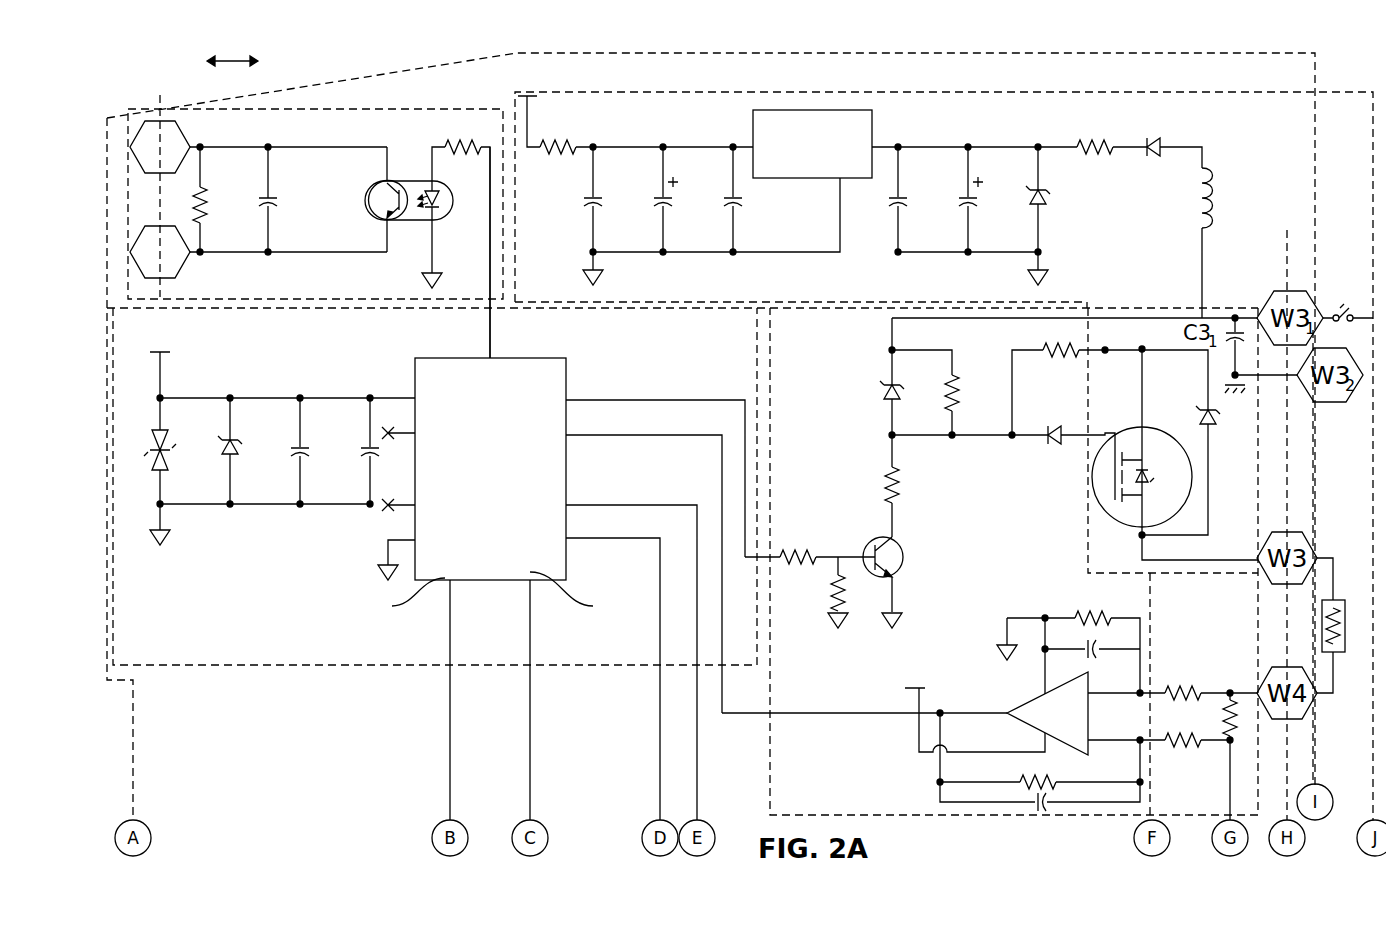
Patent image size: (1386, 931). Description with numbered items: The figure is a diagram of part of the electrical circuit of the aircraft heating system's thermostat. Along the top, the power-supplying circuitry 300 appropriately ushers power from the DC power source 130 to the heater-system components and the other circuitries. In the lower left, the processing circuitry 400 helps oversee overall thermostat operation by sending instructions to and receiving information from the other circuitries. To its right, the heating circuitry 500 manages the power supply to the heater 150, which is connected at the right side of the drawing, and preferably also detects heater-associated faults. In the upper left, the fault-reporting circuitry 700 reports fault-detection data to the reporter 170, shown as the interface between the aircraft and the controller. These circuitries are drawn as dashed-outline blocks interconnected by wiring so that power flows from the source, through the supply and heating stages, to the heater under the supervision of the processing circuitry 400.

The DC power source 130 is at (1350, 316).
The heater 150 is at (1318, 629).
The reporter 170 is at (252, 54).
The power-supplying circuitry 300 is at (939, 443).
The processing circuitry 400 is at (435, 483).
The heating circuitry 500 is at (999, 569).
The fault-reporting circuitry 700 is at (315, 233).